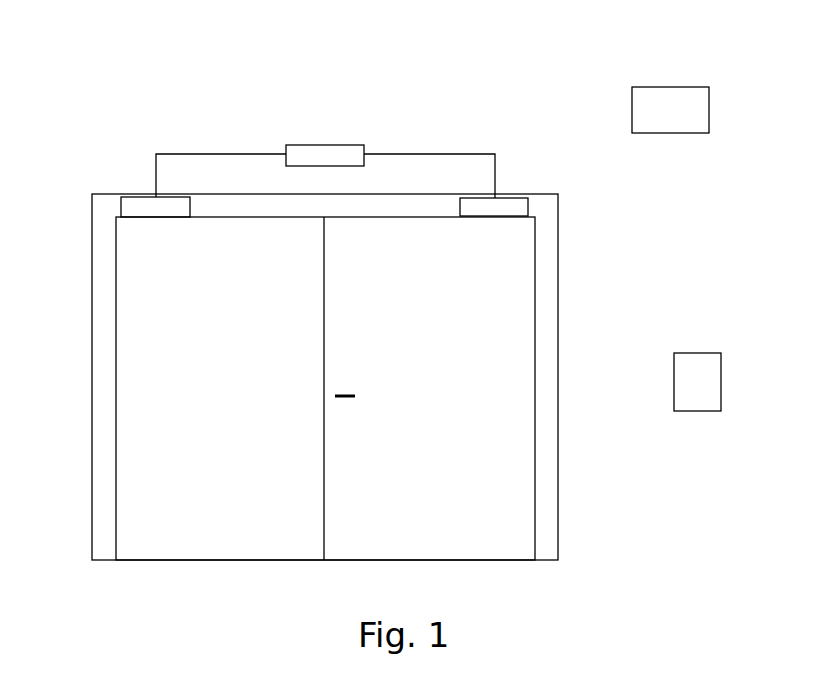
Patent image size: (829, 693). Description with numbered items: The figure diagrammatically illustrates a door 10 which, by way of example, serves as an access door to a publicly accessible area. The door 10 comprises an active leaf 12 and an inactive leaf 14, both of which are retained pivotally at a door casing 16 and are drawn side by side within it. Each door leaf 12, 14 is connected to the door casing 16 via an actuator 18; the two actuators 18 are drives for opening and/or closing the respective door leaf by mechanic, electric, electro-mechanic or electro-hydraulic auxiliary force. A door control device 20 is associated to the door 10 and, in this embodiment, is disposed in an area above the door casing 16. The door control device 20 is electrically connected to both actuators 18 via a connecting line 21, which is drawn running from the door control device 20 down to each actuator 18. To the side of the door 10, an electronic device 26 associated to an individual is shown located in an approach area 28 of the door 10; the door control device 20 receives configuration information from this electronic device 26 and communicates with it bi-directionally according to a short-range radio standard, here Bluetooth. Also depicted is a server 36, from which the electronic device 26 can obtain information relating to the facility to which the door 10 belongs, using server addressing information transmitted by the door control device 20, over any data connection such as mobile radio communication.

The door 10 is at (571, 222).
The active leaf 12 is at (517, 492).
The inactive leaf 14 is at (130, 493).
The door casing 16 is at (548, 372).
The actuator 18 is at (135, 205).
The door control device 20 is at (330, 152).
The connecting line 21 is at (420, 150).
The electronic device 26 is at (712, 383).
The approach area 28 is at (592, 579).
The server 36 is at (670, 110).